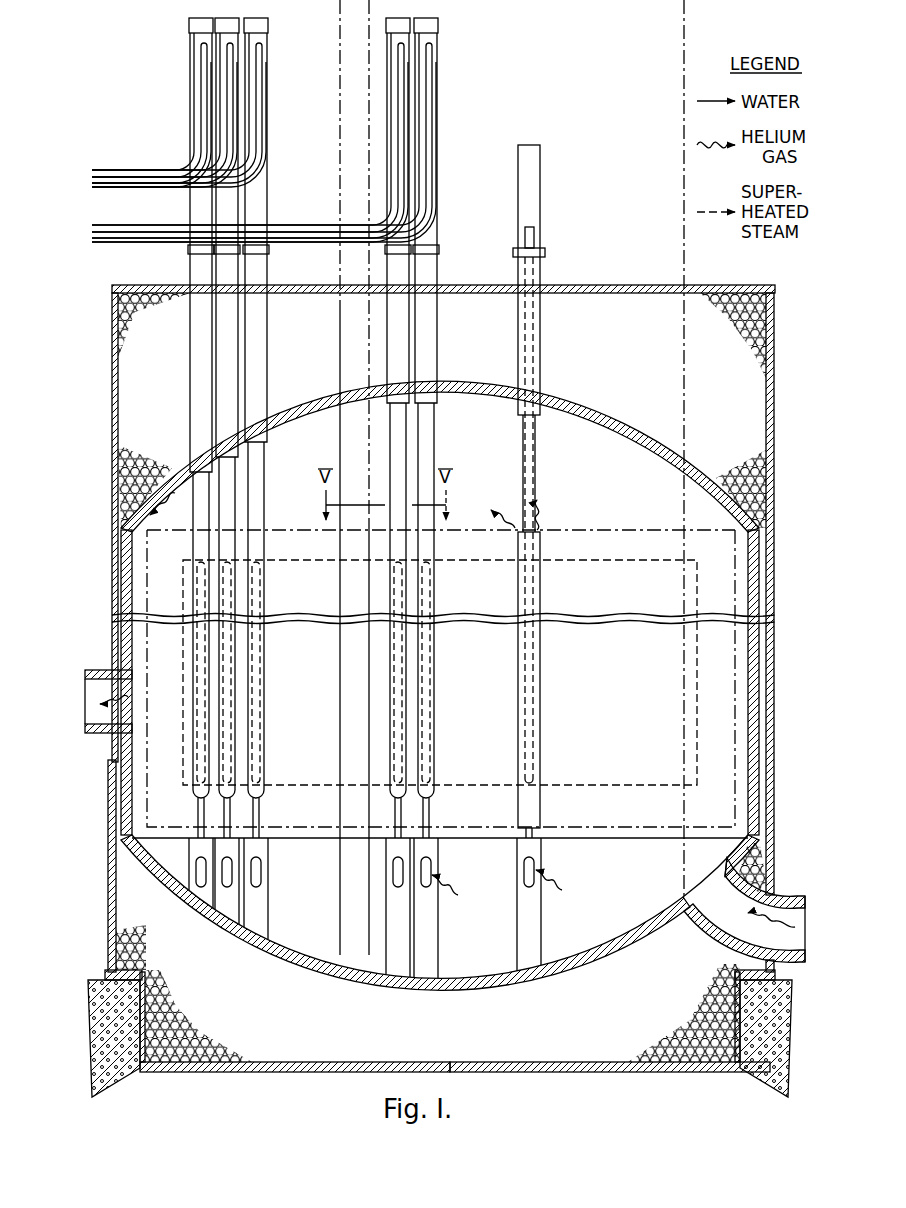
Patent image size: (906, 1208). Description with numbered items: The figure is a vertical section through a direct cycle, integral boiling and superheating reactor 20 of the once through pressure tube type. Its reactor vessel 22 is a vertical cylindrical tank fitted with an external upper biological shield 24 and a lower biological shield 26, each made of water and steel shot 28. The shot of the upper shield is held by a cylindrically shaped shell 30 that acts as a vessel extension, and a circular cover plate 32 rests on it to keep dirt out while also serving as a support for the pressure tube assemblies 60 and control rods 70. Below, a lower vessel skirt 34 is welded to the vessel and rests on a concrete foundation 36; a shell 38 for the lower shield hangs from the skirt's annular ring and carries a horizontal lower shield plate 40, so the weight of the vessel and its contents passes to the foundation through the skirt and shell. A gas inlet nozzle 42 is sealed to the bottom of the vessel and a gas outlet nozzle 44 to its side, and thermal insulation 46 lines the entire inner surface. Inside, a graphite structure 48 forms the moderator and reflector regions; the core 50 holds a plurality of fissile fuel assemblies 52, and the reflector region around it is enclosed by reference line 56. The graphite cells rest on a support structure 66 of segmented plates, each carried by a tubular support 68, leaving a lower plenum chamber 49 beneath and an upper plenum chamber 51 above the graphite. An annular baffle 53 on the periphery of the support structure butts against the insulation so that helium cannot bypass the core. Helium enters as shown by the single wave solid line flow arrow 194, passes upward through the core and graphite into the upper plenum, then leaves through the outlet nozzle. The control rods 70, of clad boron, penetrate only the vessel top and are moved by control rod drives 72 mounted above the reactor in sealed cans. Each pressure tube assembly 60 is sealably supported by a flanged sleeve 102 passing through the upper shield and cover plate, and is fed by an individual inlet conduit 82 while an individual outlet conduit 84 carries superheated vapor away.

The reactor 20 is at (98, 615).
The reactor vessel 22 is at (773, 626).
The upper biological shield 24 is at (752, 398).
The lower biological shield 26 is at (591, 1070).
The steel shot 28 is at (741, 472).
The cylindrically shaped shell 30 is at (771, 428).
The circular cover plate 32 is at (641, 289).
The lower vessel skirt 34 is at (108, 910).
The concrete foundation 36 is at (88, 1033).
The cylindrically shaped shell for the lower shield 38 is at (153, 983).
The lower shield plate 40 is at (258, 1066).
The gas inlet nozzle 42 is at (786, 902).
The gas outlet nozzle 44 is at (90, 669).
The thermal insulation 46 is at (762, 722).
The graphite structure 48 is at (719, 518).
The lower plenum chamber 49 is at (655, 926).
The core 50 is at (706, 612).
The upper plenum chamber 51 is at (566, 428).
The fissile fuel assemblies 52 is at (426, 695).
The annular baffle 53 is at (749, 838).
The reference line 56 is at (597, 530).
The pressure tube assembly 60 is at (263, 461).
The support structure 66 is at (588, 838).
The tubular support 68 is at (531, 916).
The control rod 70 is at (533, 591).
The control rod drive 72 is at (540, 190).
The individual inlet conduit 82 is at (203, 80).
The individual outlet conduit 84 is at (213, 99).
The flanged sleeve 102 is at (518, 340).
The single wave solid line flow arrow 194 is at (807, 906).